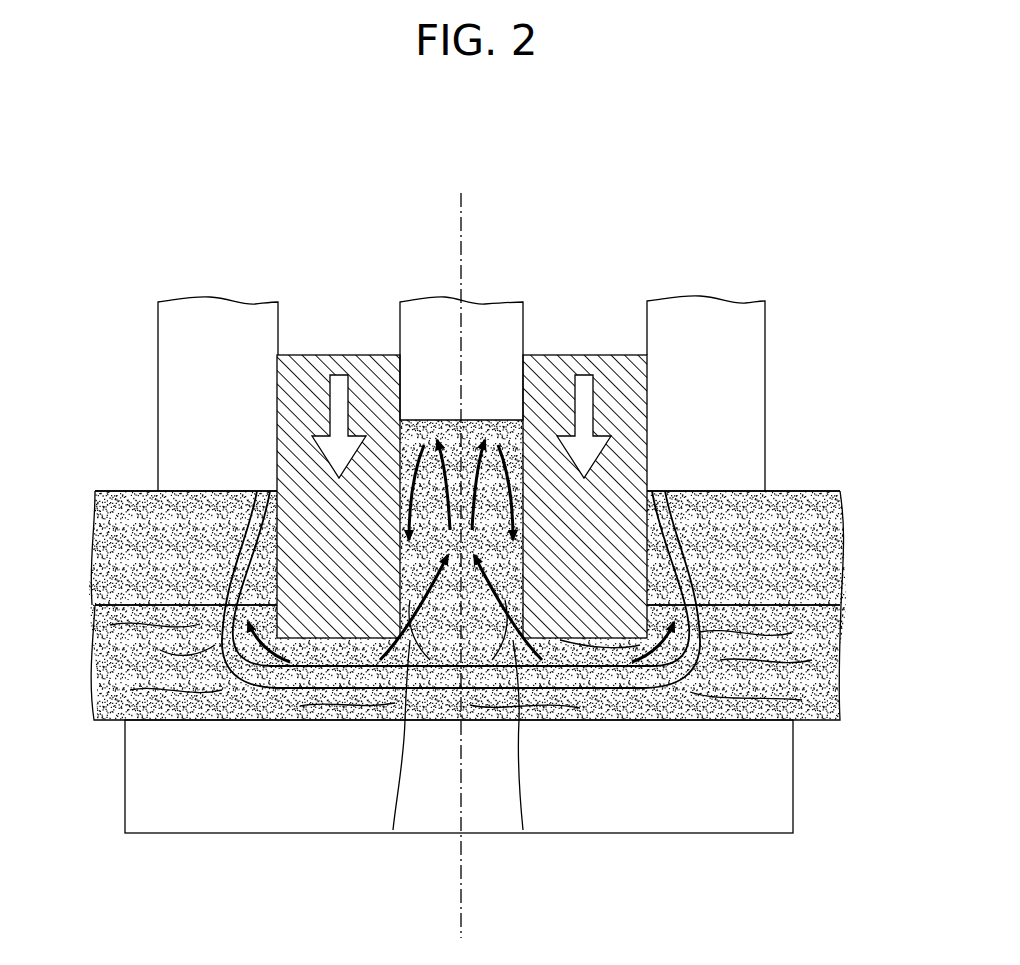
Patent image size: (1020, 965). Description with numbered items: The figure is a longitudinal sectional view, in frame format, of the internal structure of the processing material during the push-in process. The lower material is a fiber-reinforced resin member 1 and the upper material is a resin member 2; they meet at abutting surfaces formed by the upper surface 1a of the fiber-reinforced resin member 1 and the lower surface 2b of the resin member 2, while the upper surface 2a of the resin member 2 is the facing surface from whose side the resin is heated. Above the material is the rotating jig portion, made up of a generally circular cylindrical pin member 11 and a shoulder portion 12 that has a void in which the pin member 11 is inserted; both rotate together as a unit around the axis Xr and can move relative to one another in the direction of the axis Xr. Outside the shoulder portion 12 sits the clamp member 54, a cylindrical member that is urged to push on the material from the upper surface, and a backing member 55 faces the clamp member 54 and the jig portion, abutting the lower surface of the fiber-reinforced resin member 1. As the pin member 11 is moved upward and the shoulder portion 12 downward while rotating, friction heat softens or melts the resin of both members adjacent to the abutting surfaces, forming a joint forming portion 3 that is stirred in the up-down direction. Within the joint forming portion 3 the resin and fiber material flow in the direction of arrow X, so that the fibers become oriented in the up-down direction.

The fiber-reinforced resin member 1 is at (822, 667).
The upper surface of the fiber-reinforced resin member 1a is at (823, 590).
The resin member 2 is at (842, 530).
The upper surface of the resin member 2a is at (808, 490).
The lower surface of the resin member 2b is at (822, 619).
The joint forming portion 3 is at (640, 665).
The pin member 11 is at (500, 318).
The shoulder portion 12 is at (308, 372).
The clamp member 54 is at (167, 363).
The backing member 55 is at (144, 780).
The arrow X is at (393, 830).
The axis Xr is at (463, 210).